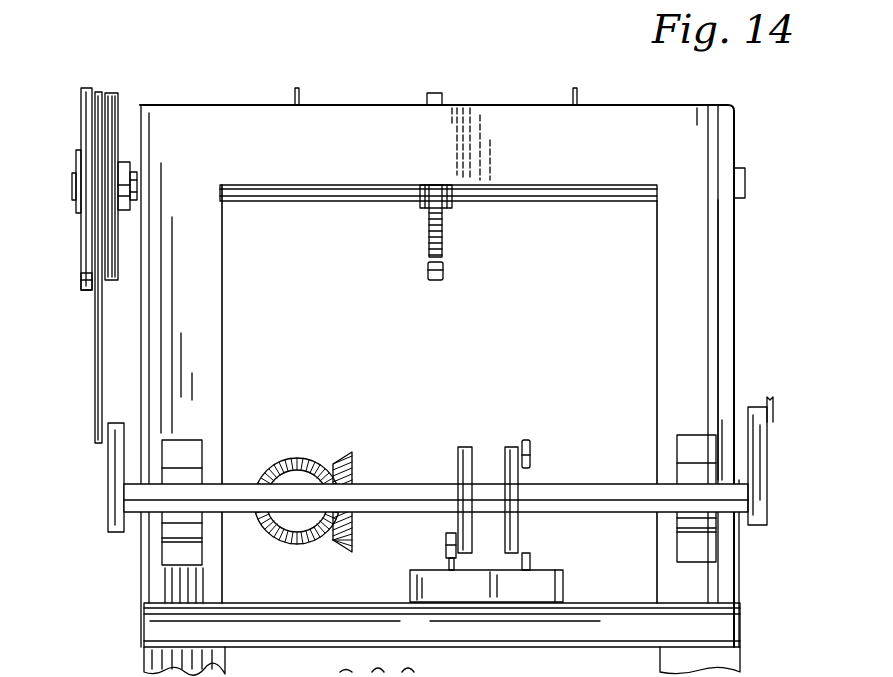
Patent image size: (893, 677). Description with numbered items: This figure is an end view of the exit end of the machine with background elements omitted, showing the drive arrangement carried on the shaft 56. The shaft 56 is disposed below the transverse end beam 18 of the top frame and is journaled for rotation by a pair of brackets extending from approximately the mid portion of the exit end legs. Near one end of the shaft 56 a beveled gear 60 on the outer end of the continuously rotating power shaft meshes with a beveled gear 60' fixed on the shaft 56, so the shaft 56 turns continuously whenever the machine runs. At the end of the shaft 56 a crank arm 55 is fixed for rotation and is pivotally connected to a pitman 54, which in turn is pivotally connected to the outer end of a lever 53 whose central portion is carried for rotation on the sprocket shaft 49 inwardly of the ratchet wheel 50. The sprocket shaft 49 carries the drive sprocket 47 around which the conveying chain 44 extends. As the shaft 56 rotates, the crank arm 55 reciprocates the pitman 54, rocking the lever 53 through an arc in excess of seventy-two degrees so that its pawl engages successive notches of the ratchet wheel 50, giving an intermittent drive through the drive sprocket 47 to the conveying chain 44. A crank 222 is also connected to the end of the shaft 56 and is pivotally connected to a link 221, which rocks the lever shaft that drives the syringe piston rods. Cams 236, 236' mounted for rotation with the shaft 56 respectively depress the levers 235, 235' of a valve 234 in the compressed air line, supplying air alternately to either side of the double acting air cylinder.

The end beam 18 is at (628, 120).
The conveying chain 44 is at (430, 225).
The drive sprocket 47 is at (443, 247).
The sprocket shaft 49 is at (327, 197).
The ratchet wheel 50 is at (85, 253).
The lever 53 is at (113, 103).
The pitman 54 is at (98, 386).
The crank arm 55 is at (115, 480).
The shaft 56 is at (407, 510).
The beveled gear 60 is at (297, 484).
The beveled gear 60' is at (363, 498).
The link 221 is at (773, 420).
The crank 222 is at (768, 465).
The valve 234 is at (418, 590).
The lever 235 is at (423, 557).
The second lever 235' is at (552, 552).
The cam 236 is at (464, 502).
The cam 236' is at (552, 447).